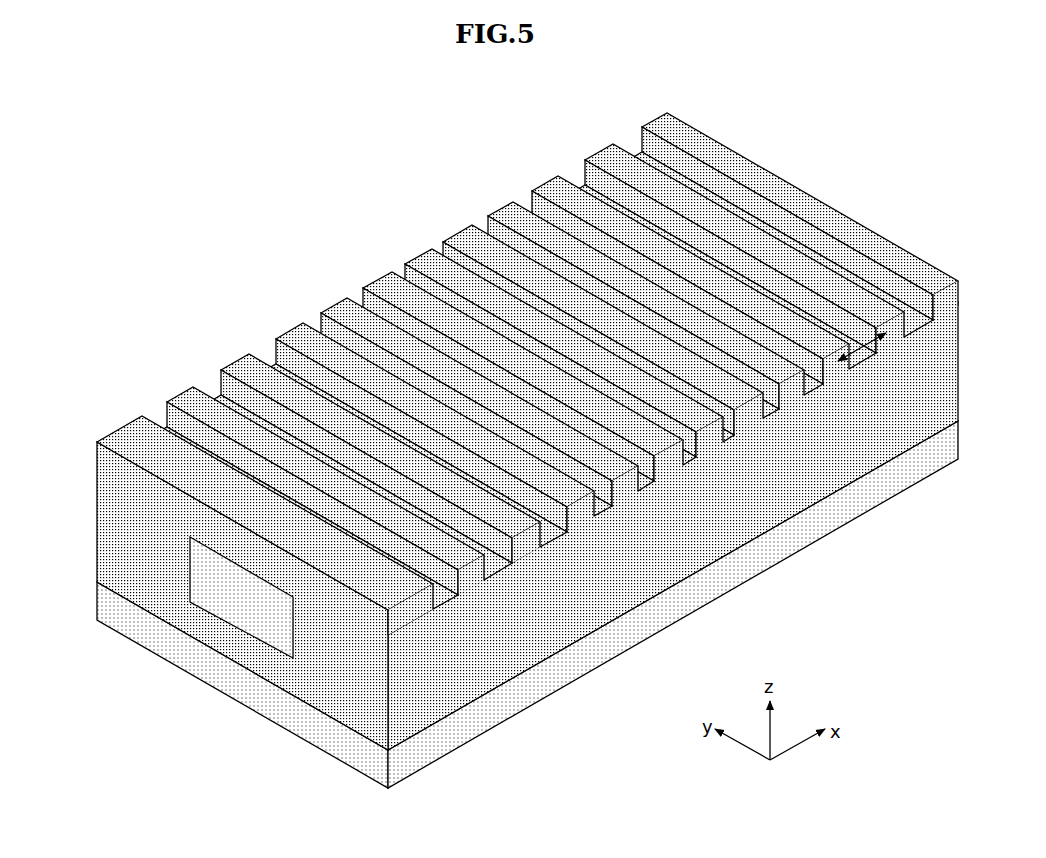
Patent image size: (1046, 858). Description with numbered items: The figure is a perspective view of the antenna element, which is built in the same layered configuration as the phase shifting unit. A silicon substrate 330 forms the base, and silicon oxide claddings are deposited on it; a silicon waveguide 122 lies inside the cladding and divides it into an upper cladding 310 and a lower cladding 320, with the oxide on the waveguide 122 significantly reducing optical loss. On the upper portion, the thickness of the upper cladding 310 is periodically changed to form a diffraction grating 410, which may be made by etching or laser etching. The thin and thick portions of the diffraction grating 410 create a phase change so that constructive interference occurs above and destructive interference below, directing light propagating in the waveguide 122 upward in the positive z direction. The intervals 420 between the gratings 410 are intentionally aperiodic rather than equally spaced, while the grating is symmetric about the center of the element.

The waveguide 122 is at (207, 582).
The upper cladding 310 is at (256, 552).
The lower cladding 320 is at (237, 648).
The silicon substrate 330 is at (287, 713).
The diffraction grating 410 is at (250, 368).
The interval 420 is at (858, 345).